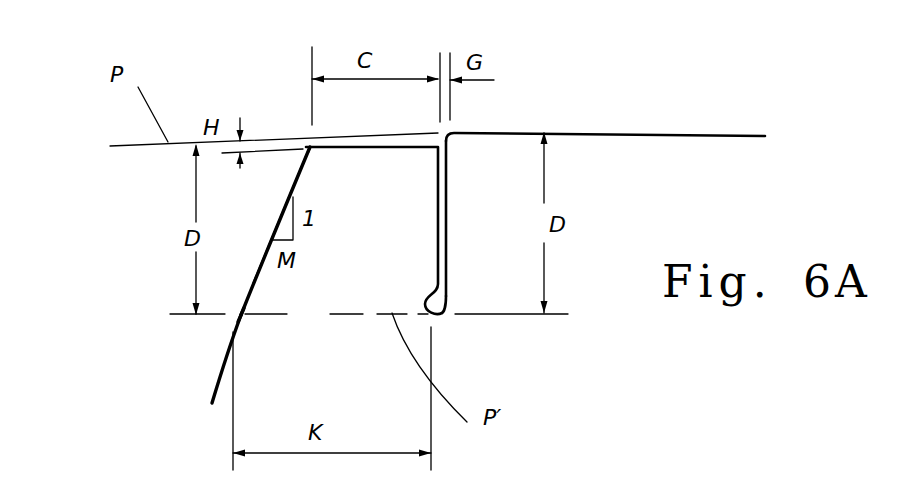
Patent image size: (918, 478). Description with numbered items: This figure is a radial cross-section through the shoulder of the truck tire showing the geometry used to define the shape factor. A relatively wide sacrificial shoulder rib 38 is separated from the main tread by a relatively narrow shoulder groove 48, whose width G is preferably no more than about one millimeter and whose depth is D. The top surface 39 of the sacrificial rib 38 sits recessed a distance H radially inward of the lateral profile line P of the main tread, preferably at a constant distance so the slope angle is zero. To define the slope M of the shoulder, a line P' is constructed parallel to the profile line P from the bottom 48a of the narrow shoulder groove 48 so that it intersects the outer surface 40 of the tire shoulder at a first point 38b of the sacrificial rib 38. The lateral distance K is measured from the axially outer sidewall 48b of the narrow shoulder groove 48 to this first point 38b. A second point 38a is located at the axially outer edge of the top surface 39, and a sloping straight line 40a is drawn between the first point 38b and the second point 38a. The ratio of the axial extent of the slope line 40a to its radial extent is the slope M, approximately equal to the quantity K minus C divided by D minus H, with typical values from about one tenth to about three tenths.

The sacrificial shoulder rib 38 is at (363, 146).
The second point of the sacrificial rib 38a is at (308, 146).
The first point of the sacrificial rib 38b is at (240, 315).
The top surface of the sacrificial rib 39 is at (381, 143).
The outer surface of the tire shoulder 40 is at (296, 180).
The sloping straight line 40a is at (253, 285).
The narrow shoulder groove 48 is at (441, 192).
The bottom of the narrow shoulder groove 48a is at (441, 315).
The axially outer sidewall of the narrow shoulder groove 48b is at (440, 248).